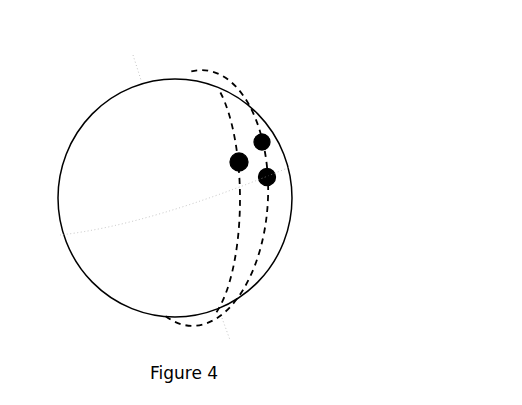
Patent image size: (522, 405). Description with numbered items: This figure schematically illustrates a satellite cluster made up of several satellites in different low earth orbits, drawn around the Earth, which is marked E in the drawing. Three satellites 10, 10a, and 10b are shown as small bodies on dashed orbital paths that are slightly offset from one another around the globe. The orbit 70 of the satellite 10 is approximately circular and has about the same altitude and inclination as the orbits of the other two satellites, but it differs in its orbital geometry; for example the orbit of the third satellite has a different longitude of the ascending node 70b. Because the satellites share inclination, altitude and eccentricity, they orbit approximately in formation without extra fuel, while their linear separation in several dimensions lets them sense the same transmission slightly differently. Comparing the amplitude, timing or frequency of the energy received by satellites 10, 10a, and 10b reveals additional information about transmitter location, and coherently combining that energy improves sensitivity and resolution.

The satellite 10 is at (277, 142).
The satellite 10a is at (287, 176).
The satellite 10b is at (230, 160).
The orbit 70 is at (247, 86).
The longitude of the ascending node 70b is at (293, 253).
The equator line E is at (175, 201).